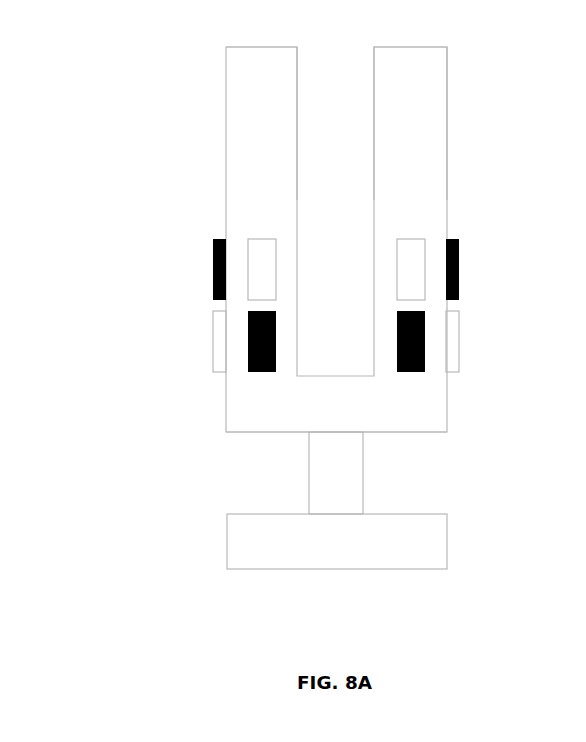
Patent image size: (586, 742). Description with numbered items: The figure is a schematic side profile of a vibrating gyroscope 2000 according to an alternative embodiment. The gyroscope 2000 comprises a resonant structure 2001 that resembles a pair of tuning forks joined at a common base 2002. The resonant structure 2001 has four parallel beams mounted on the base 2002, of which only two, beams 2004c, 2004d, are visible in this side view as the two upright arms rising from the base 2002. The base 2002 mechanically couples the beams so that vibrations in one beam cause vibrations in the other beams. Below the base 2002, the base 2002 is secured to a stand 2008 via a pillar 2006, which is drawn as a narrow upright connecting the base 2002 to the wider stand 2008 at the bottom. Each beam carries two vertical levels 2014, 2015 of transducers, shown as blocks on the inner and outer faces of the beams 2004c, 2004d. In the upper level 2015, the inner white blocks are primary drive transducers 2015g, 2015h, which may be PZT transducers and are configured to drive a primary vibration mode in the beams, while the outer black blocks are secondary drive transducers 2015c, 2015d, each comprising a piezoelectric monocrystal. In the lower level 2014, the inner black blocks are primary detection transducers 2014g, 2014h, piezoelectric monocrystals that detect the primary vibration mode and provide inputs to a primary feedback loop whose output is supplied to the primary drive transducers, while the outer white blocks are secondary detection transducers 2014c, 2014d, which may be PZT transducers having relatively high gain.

The vibrating gyroscope 2000 is at (152, 52).
The resonant structure 2001 is at (226, 428).
The base 2002 is at (274, 432).
The beam 2004c is at (226, 157).
The beam 2004d is at (447, 157).
The pillar 2006 is at (363, 493).
The stand 2008 is at (447, 548).
The vertical level of transducers 2014 is at (97, 312).
The secondary detection transducer 2014c is at (213, 345).
The secondary detection transducer 2014d is at (459, 342).
The primary detection transducer 2014g is at (248, 363).
The primary detection transducer 2014h is at (425, 363).
The vertical level of transducers 2015 is at (97, 240).
The secondary drive transducer 2015c is at (213, 270).
The secondary drive transducer 2015d is at (459, 270).
The primary drive transducer 2015g is at (248, 245).
The primary drive transducer 2015h is at (425, 245).